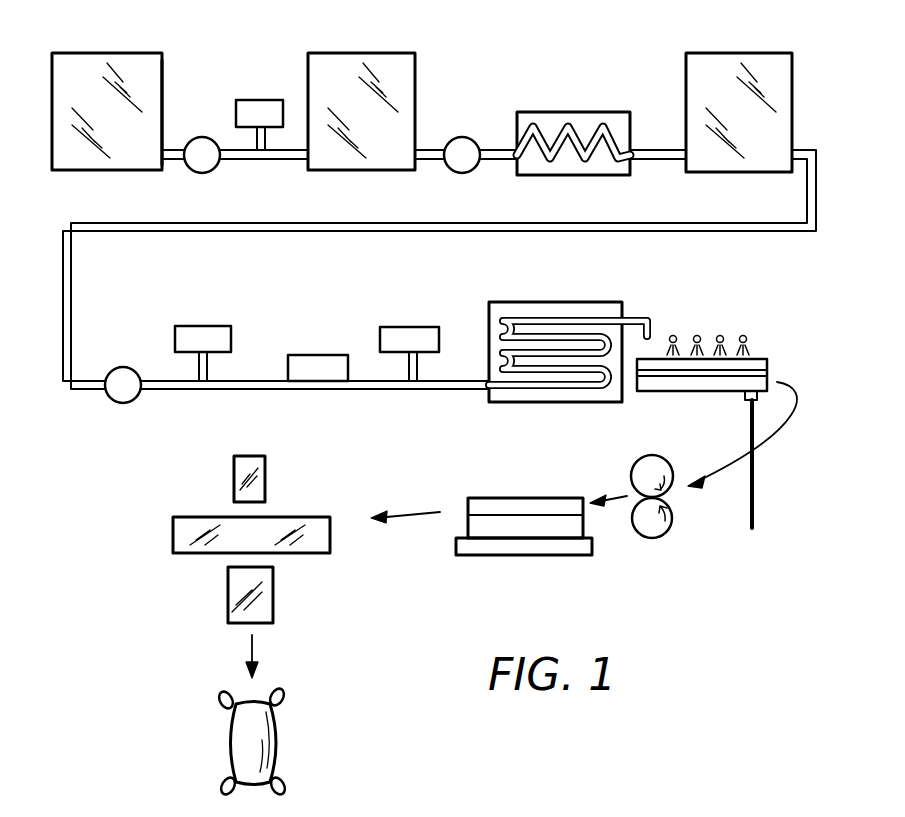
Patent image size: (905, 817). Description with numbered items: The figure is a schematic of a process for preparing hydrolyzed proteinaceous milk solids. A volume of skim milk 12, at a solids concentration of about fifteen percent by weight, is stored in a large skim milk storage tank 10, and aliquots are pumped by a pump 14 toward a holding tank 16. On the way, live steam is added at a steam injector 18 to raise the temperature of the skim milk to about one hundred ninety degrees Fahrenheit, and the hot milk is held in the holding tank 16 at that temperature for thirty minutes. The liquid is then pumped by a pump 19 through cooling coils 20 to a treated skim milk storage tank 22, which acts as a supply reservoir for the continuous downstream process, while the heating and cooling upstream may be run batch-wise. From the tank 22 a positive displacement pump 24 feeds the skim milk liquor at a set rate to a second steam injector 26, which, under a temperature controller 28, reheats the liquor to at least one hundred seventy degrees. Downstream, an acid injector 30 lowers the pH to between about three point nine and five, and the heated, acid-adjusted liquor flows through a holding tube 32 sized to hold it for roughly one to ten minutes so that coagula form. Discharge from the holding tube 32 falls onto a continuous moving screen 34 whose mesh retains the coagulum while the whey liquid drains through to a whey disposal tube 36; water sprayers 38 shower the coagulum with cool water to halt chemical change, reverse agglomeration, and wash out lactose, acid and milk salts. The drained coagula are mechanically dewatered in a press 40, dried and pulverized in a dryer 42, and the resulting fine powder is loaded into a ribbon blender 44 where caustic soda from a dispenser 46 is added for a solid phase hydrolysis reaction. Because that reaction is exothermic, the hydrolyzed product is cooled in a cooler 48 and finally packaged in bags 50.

The skim milk storage tank 10 is at (105, 53).
The skim milk 12 is at (162, 82).
The pump 14 is at (207, 137).
The holding tank 16 is at (415, 61).
The steam injector 18 is at (262, 100).
The pump 19 is at (470, 137).
The cooling coils 20 is at (590, 112).
The treated skim milk storage tank 22 is at (745, 53).
The positive displacement pump 24 is at (127, 367).
The second steam injector 26 is at (205, 326).
The temperature controller 28 is at (310, 355).
The acid injector 30 is at (415, 327).
The holding tube 32 is at (596, 302).
The continuous moving screen 34 is at (804, 345).
The whey disposal tube 36 is at (754, 504).
The water sprayers 38 is at (724, 335).
The press 40 is at (652, 456).
The dryer 42 is at (523, 498).
The ribbon blender 44 is at (330, 543).
The dispenser 46 is at (265, 478).
The cooler 48 is at (273, 600).
The bags 50 is at (278, 738).